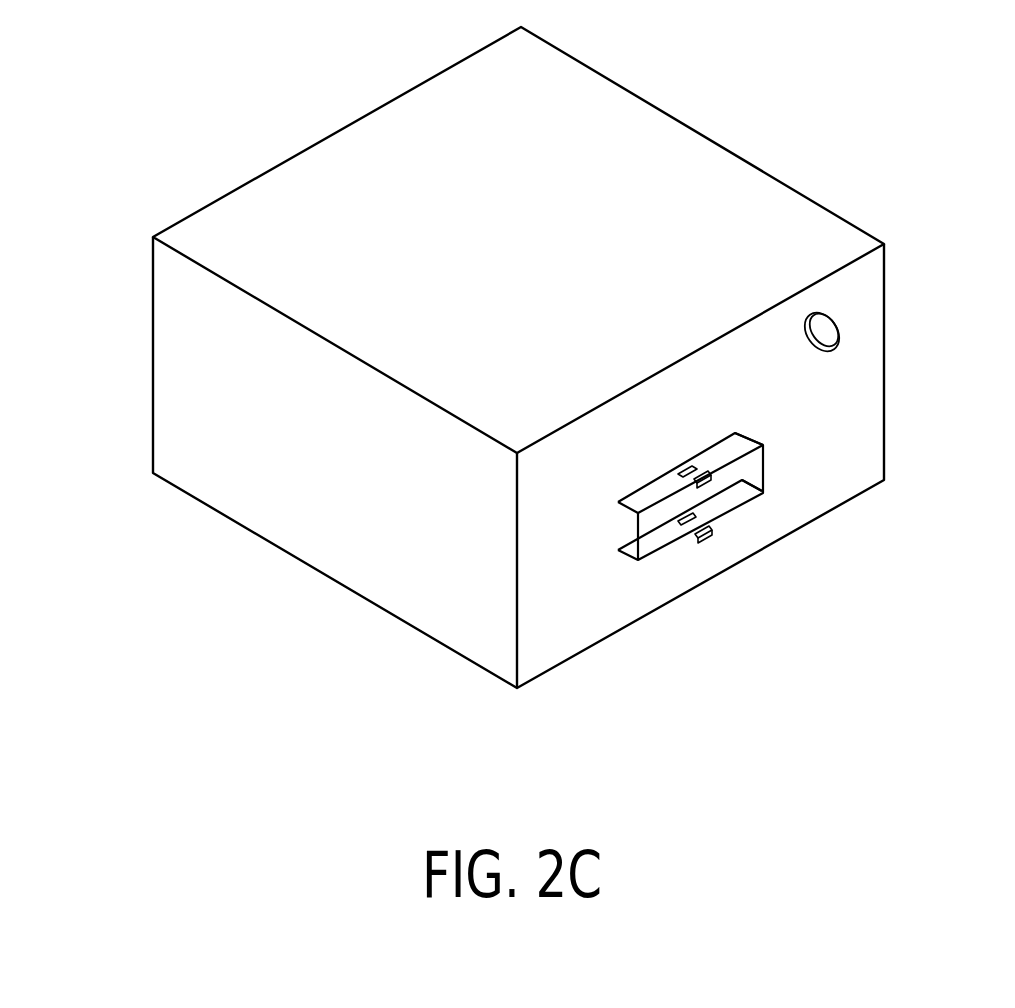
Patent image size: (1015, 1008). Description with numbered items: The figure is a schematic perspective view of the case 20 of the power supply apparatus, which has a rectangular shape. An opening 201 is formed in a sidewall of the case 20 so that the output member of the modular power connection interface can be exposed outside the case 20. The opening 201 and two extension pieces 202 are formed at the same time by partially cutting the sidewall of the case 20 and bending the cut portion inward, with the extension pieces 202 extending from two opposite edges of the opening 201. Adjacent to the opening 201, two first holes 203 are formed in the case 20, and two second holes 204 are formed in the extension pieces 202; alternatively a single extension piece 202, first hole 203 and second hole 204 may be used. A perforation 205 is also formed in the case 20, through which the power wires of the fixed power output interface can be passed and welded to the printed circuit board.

The case 20 is at (680, 148).
The opening 201 is at (750, 472).
The extension pieces 202 is at (737, 445).
The first hole 203 is at (708, 476).
The second hole 204 is at (685, 474).
The perforation 205 is at (823, 330).